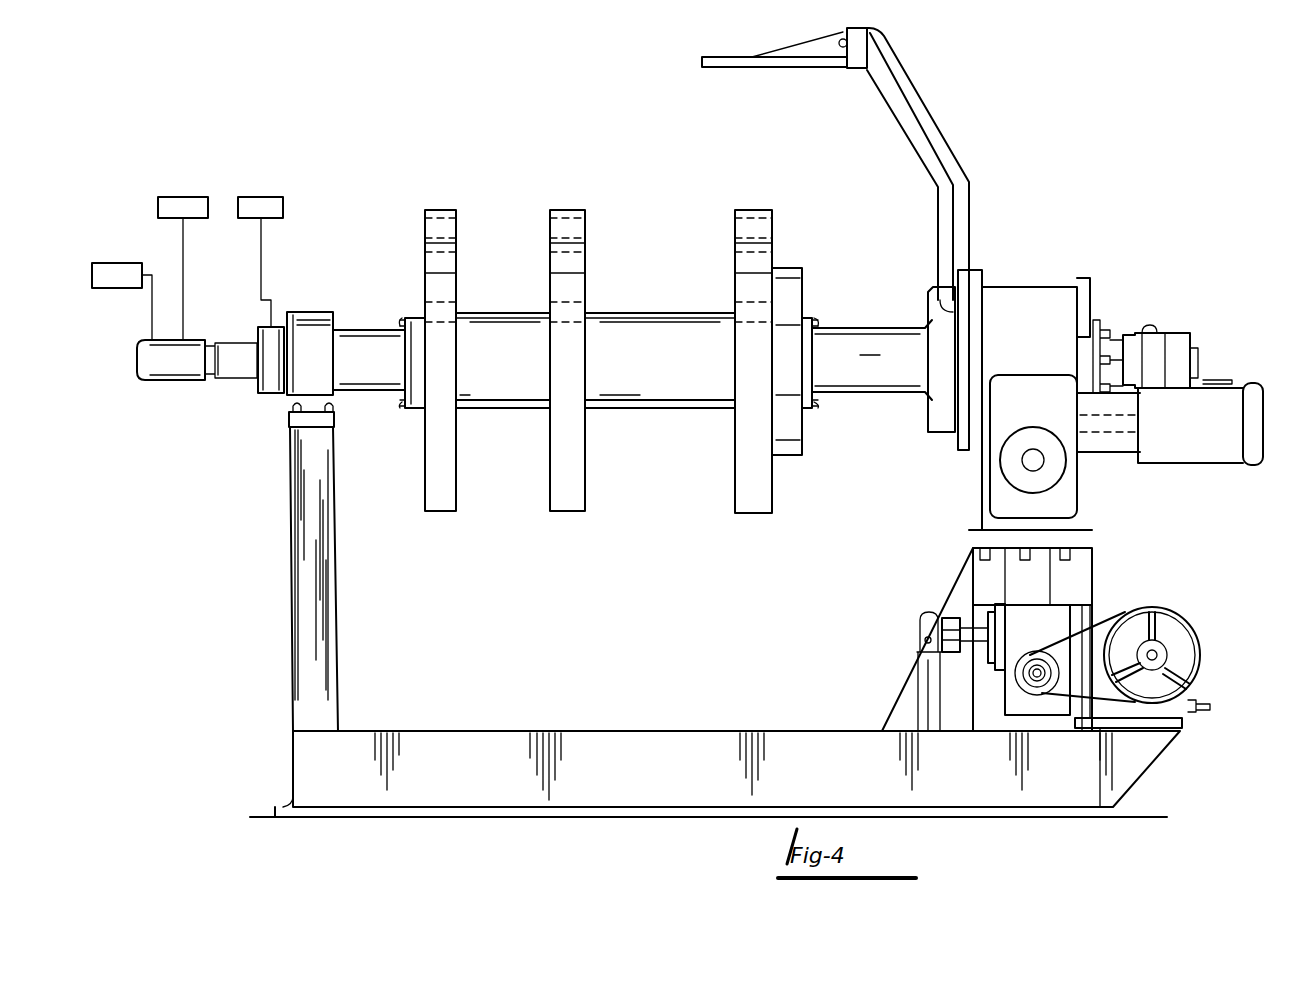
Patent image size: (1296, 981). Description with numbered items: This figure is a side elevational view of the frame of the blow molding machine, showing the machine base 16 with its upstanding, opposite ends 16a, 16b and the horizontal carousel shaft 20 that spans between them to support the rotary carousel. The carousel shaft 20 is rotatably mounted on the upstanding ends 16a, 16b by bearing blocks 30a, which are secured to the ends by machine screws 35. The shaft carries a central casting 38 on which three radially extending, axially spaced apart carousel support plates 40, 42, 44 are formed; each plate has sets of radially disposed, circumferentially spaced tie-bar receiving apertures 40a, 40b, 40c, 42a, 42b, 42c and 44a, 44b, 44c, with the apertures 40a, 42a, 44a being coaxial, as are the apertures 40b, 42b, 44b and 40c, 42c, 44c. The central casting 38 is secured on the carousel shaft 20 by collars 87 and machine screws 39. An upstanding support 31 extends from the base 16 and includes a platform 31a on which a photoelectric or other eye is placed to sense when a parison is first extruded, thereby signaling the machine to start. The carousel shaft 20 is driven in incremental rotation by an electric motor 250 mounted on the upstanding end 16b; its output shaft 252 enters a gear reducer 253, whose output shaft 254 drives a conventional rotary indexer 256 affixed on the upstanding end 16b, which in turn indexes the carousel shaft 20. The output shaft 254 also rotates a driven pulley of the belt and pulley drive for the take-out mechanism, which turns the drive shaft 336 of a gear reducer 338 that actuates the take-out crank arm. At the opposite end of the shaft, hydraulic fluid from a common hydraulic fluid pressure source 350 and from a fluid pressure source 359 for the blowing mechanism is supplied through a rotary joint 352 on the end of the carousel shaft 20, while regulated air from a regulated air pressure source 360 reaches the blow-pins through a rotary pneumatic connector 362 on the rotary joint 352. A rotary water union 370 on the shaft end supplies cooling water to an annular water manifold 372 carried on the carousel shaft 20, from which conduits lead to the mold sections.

The machine base 16 is at (606, 731).
The upstanding end of the base 16a is at (296, 572).
The upstanding end of the base 16b is at (978, 563).
The carousel shaft 20 is at (870, 395).
The bearing block 30a is at (313, 318).
The upstanding support 31 is at (943, 133).
The platform 31a is at (798, 42).
The machine screws 35 is at (298, 412).
The central casting 38 is at (515, 405).
The machine screws 39 is at (404, 410).
The carousel support plate 40 is at (440, 511).
The tie-bar receiving aperture 40a is at (455, 225).
The tie-bar receiving aperture 40b is at (458, 315).
The tie-bar receiving aperture 40c is at (455, 245).
The carousel support plate 42 is at (560, 511).
The tie-bar receiving aperture 42a is at (587, 228).
The tie-bar receiving aperture 42b is at (588, 316).
The tie-bar receiving aperture 42c is at (586, 250).
The carousel support plate 44 is at (750, 513).
The tie-bar receiving aperture 44a is at (775, 226).
The tie-bar receiving aperture 44b is at (800, 302).
The tie-bar receiving aperture 44c is at (775, 250).
The collars 87 is at (408, 318).
The electric motor 250 is at (1228, 450).
The output shaft of the electric motor 252 is at (1107, 423).
The gear reducer 253 is at (1060, 498).
The output shaft of the gear reducer 254 is at (1040, 460).
The rotary indexer 256 is at (1048, 292).
The drive shaft 336 is at (955, 617).
The gear reducer 338 is at (1055, 634).
The hydraulic fluid pressure source 350 is at (183, 197).
The rotary joint 352 is at (172, 380).
The fluid pressure source 359 is at (112, 263).
The regulated air pressure source 360 is at (262, 197).
The rotary pneumatic connector 362 is at (262, 330).
The rotary water union 370 is at (1157, 348).
The annular water manifold 372 is at (932, 432).